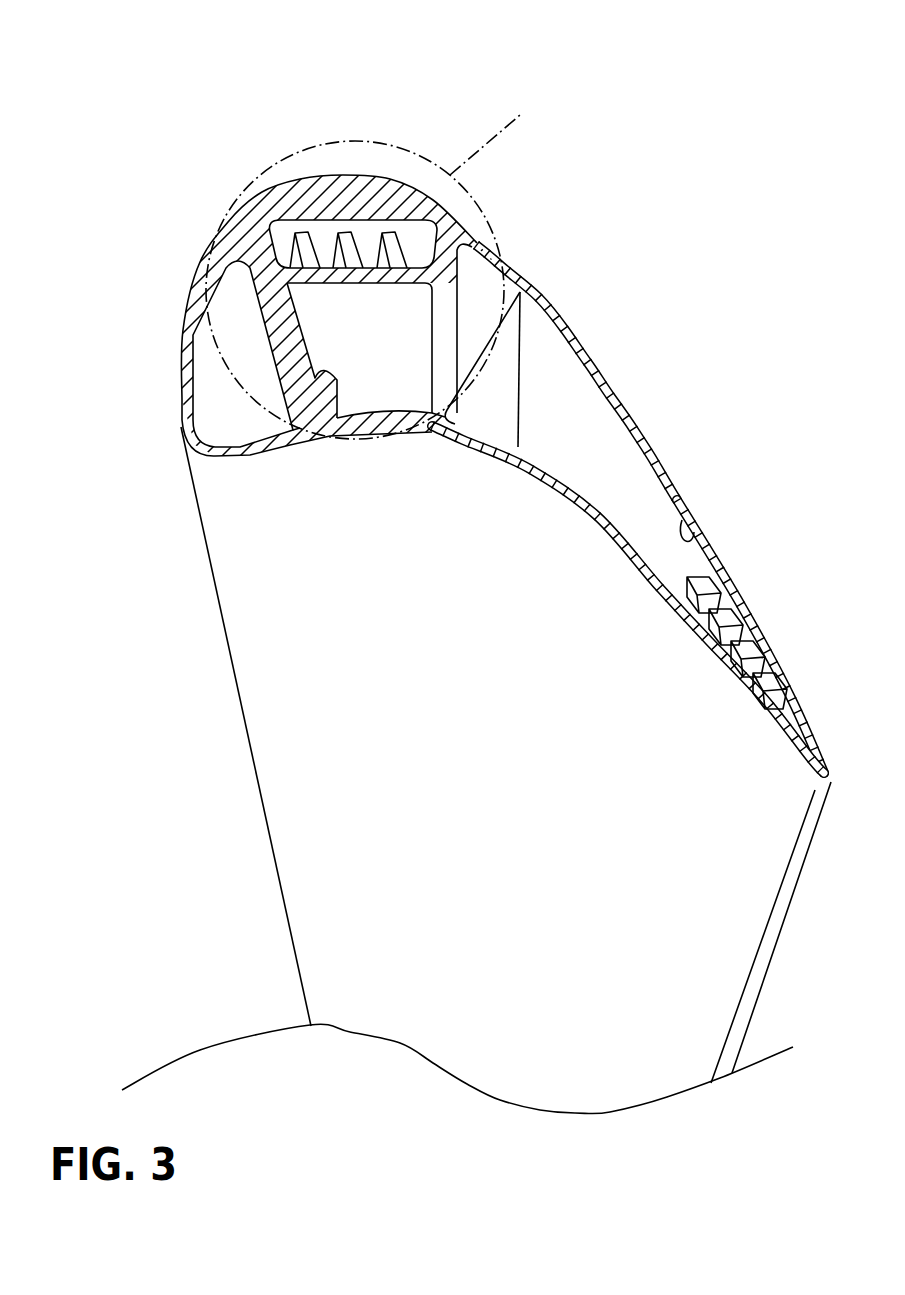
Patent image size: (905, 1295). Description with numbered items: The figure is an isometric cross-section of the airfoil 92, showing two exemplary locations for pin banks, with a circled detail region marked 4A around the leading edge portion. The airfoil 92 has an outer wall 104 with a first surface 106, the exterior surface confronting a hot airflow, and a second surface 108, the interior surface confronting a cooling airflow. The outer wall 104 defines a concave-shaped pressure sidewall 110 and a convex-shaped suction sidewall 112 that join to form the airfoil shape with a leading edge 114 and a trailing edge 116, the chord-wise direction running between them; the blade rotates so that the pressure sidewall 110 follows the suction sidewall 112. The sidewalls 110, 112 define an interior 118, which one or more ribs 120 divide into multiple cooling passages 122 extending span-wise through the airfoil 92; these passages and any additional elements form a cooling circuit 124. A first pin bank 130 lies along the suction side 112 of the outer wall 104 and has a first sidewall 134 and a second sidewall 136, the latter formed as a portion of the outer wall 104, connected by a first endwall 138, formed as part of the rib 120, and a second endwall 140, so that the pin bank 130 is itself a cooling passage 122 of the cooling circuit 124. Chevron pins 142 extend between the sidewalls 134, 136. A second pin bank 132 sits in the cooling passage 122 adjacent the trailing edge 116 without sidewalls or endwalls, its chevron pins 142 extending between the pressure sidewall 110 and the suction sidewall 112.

The airfoil 92 is at (800, 24).
The outer wall 104 is at (360, 172).
The first surface 106 is at (675, 483).
The second surface 108 is at (703, 537).
The pressure sidewall 110 is at (572, 510).
The suction sidewall 112 is at (647, 447).
The leading edge 114 is at (243, 735).
The trailing edge 116 is at (797, 883).
The interior 118 is at (501, 424).
The rib 120 is at (333, 378).
The cooling passage 122 is at (286, 243).
The cooling circuit 124 is at (401, 388).
The first pin bank 130 is at (335, 222).
The second pin bank 132 is at (727, 643).
The first sidewall 134 is at (357, 285).
The second sidewall 136 is at (388, 228).
The first endwall 138 is at (262, 243).
The second endwall 140 is at (483, 275).
The chevron pin 142 is at (294, 232).
The detail view 4A is at (380, 268).